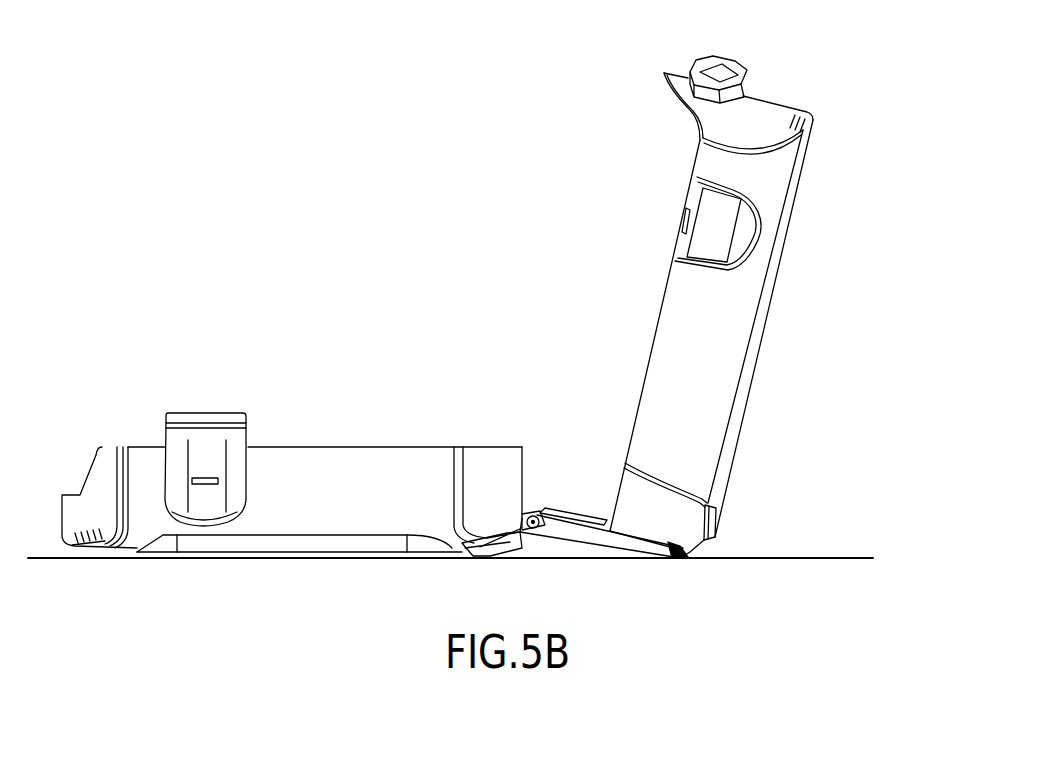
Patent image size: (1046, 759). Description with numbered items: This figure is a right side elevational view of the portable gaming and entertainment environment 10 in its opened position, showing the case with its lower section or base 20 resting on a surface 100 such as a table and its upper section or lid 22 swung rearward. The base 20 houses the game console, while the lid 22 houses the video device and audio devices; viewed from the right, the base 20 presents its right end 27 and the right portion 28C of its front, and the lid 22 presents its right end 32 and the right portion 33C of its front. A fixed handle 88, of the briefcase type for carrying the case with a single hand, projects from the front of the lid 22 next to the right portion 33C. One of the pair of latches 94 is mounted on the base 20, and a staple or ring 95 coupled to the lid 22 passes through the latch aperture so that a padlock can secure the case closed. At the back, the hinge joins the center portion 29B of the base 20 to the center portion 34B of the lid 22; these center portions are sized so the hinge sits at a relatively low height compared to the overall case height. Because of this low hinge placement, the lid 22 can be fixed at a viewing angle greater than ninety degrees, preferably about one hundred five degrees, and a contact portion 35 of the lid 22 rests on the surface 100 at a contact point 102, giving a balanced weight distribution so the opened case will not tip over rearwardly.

The portable gaming and entertainment environment 10 is at (262, 218).
The base 20 is at (177, 573).
The lid 22 is at (800, 297).
The right end 27 is at (327, 503).
The right portion of the front of the base 28C is at (100, 480).
The center portion of the back of the base 29B is at (522, 535).
The right end of the lid 32 is at (707, 370).
The right portion of the front of the lid 33C is at (765, 110).
The center portion of the back of the lid 34B is at (587, 530).
The contact portion 35 is at (665, 547).
The fixed handle 88 is at (716, 62).
The latch 94 is at (235, 438).
The ring 95 is at (680, 222).
The surface 100 is at (800, 558).
The contact point 102 is at (677, 564).